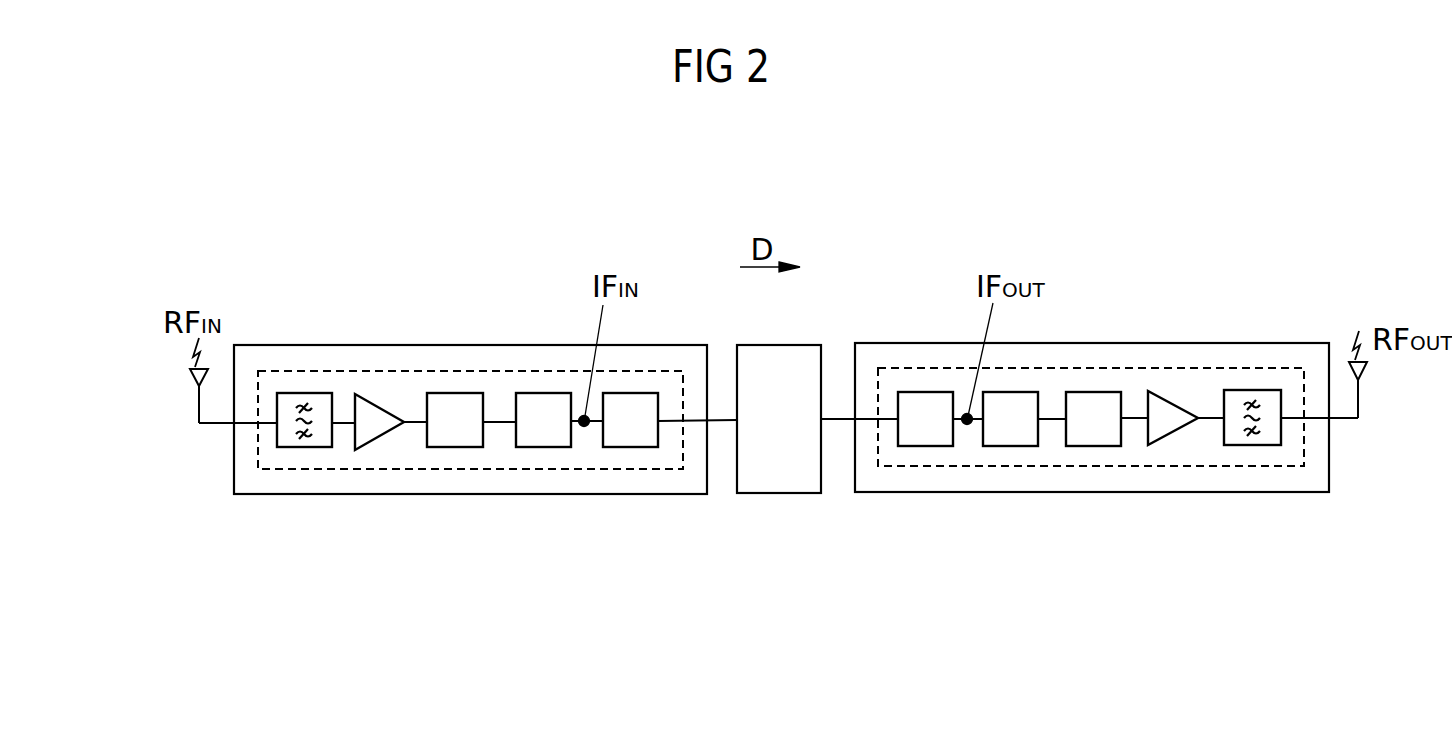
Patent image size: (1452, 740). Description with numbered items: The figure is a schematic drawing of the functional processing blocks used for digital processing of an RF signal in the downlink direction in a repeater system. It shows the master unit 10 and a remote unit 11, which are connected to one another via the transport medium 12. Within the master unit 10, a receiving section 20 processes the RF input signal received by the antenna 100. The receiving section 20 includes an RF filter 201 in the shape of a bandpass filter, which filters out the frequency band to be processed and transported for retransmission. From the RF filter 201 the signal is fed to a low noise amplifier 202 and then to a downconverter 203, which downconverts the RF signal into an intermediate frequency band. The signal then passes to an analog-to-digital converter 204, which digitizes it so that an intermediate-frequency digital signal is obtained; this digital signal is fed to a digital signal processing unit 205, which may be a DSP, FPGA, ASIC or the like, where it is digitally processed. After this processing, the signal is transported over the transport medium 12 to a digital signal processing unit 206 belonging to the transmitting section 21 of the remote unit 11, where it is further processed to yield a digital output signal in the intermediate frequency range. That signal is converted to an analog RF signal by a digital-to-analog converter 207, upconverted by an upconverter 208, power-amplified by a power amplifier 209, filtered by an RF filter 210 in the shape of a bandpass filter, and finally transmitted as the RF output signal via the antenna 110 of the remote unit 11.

The master unit 10 is at (398, 345).
The remote unit 11 is at (1130, 343).
The transport medium 12 is at (771, 494).
The receiving section 20 is at (263, 470).
The transmitting section 21 is at (1295, 468).
The antenna 100 is at (198, 395).
The antenna 110 is at (1362, 400).
The RF filter 201 is at (298, 448).
The low noise amplifier 202 is at (377, 438).
The downconverter 203 is at (452, 448).
The analog-to-digital converter 204 is at (540, 448).
The digital signal processing unit 205 is at (628, 448).
The digital signal processing unit 206 is at (926, 446).
The digital-to-analog converter 207 is at (1010, 446).
The upconverter 208 is at (1095, 446).
The power amplifier 209 is at (1170, 435).
The RF filter 210 is at (1248, 445).